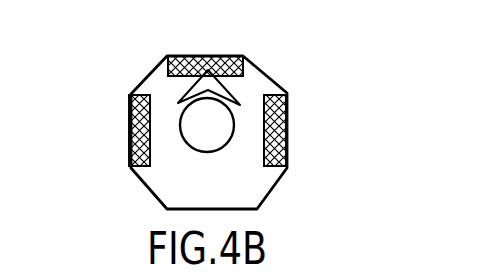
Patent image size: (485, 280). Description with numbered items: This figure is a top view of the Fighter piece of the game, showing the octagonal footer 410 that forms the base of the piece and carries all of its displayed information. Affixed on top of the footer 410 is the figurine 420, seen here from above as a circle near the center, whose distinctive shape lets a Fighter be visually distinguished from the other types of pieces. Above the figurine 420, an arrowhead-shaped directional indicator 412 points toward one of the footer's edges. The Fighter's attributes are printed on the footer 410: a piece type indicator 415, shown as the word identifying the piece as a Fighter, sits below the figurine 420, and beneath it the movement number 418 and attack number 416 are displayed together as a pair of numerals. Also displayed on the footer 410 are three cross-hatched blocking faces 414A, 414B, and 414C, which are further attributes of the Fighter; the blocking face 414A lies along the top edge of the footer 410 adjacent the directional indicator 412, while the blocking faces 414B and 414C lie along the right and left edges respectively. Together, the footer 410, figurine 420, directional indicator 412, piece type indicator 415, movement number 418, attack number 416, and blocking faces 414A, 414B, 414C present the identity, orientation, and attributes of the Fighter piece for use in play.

The footer 410 is at (153, 70).
The directional indicator 412 is at (232, 96).
The blocking face 414A is at (183, 55).
The blocking face 414B is at (287, 123).
The blocking face 414C is at (128, 123).
The piece type indicator 415 is at (250, 173).
The attack number 416 is at (224, 191).
The movement number 418 is at (186, 191).
The figurine 420 is at (230, 121).